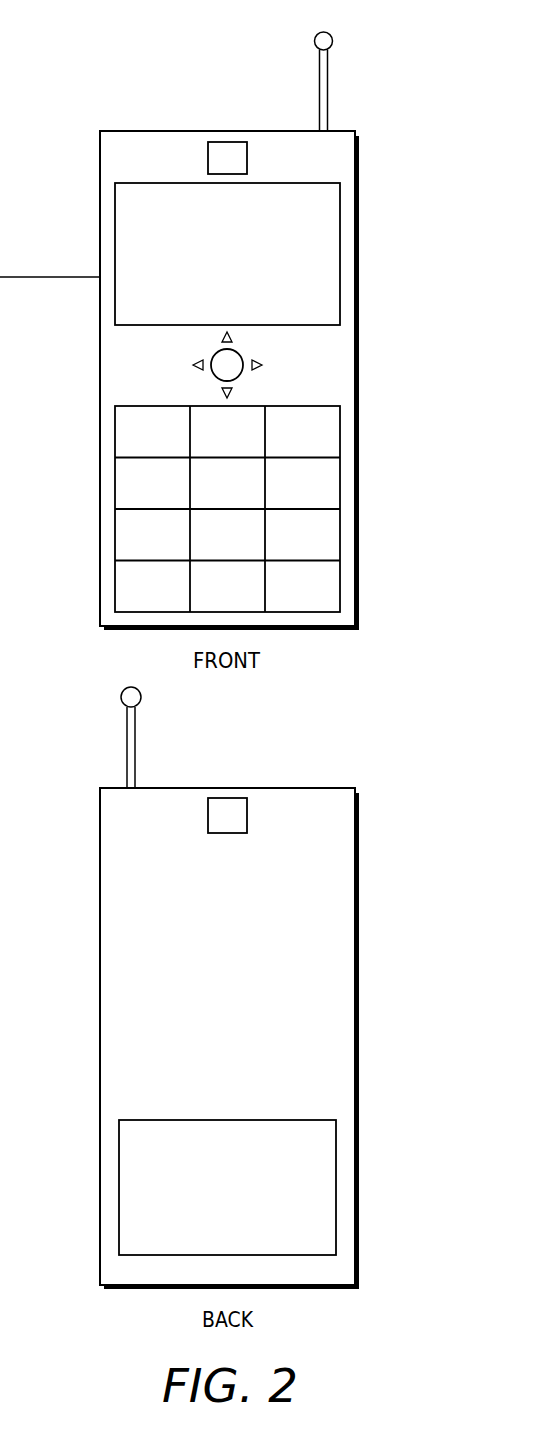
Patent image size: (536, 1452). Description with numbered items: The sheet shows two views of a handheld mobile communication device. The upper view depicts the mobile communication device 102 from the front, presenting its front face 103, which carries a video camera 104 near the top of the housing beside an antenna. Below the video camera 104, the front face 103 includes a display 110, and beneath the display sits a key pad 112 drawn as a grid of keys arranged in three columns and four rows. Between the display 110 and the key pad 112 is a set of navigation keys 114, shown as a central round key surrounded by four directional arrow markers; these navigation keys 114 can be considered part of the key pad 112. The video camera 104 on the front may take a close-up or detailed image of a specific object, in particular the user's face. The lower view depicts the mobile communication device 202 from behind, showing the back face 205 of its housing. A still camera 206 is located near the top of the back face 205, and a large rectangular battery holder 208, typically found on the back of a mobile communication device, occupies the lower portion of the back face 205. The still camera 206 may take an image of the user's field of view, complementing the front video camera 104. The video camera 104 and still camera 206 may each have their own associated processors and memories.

In FIG. 1, the mobile communication device 102 is at (366, 88).
In FIG. 1, the front face 103 is at (115, 346).
In FIG. 1, the video camera 104 is at (228, 142).
In FIG. 1, the display 110 is at (170, 183).
In FIG. 1, the key pad 112 is at (373, 323).
In FIG. 1, the set of navigation keys 114 is at (193, 365).
In FIG. 2, the mobile communication device 202 is at (366, 753).
In FIG. 2, the back face 205 is at (110, 981).
In FIG. 2, the still camera 206 is at (228, 833).
In FIG. 2, the battery holder 208 is at (227, 1120).